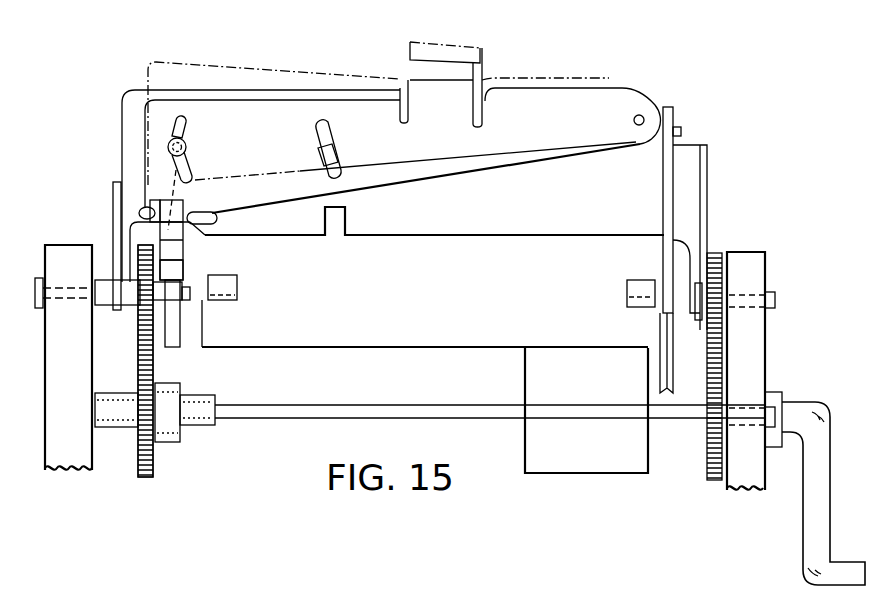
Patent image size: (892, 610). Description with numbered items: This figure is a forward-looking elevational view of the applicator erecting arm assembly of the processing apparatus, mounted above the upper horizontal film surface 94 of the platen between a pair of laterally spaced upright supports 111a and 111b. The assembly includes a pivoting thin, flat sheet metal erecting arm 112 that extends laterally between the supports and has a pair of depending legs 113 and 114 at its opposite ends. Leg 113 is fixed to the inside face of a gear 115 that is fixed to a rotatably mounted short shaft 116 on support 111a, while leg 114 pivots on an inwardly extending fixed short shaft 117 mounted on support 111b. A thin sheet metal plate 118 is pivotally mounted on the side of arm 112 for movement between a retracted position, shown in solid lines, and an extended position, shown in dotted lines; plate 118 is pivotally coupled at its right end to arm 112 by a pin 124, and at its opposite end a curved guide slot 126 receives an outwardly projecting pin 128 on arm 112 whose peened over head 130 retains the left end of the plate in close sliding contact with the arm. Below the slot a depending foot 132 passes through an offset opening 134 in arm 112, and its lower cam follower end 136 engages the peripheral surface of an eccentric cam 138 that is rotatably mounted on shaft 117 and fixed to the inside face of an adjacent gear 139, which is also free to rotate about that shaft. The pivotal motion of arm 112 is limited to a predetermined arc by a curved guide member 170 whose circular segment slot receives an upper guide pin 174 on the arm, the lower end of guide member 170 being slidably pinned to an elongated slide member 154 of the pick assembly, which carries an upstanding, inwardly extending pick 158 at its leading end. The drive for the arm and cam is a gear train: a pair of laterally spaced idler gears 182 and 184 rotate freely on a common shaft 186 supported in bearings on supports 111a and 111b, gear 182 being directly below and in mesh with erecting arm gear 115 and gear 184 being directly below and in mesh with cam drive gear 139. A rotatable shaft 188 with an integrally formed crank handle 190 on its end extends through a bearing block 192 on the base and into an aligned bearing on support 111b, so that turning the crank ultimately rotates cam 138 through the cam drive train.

The upper horizontal film surface 94 is at (395, 347).
The upright support 111a is at (755, 273).
The upright support 111b is at (62, 256).
The erecting arm 112 is at (410, 62).
The depending leg 113 is at (688, 265).
The depending leg 114 is at (118, 203).
The gear 115 is at (712, 252).
The short shaft 116 is at (775, 300).
The fixed short shaft 117 is at (100, 292).
The plate 118 is at (552, 96).
The pin 124 is at (642, 116).
The curved guide slot 126 is at (190, 173).
The pin 128 is at (183, 133).
The peened over head 130 is at (187, 149).
The depending foot 132 is at (183, 247).
The offset opening 134 is at (224, 221).
The cam follower end 136 is at (186, 280).
The eccentric cam 138 is at (192, 362).
The gear 139 is at (138, 320).
The slide member 154 is at (222, 323).
The pick 158 is at (237, 297).
The curved guide member 170 is at (664, 190).
The upper guide pin 174 is at (681, 128).
The idler gear 182 is at (707, 455).
The idler gear 184 is at (152, 462).
The common shaft 186 is at (322, 420).
The rotatable shaft 188 is at (788, 398).
The crank handle 190 is at (830, 470).
The bearing block 192 is at (583, 463).